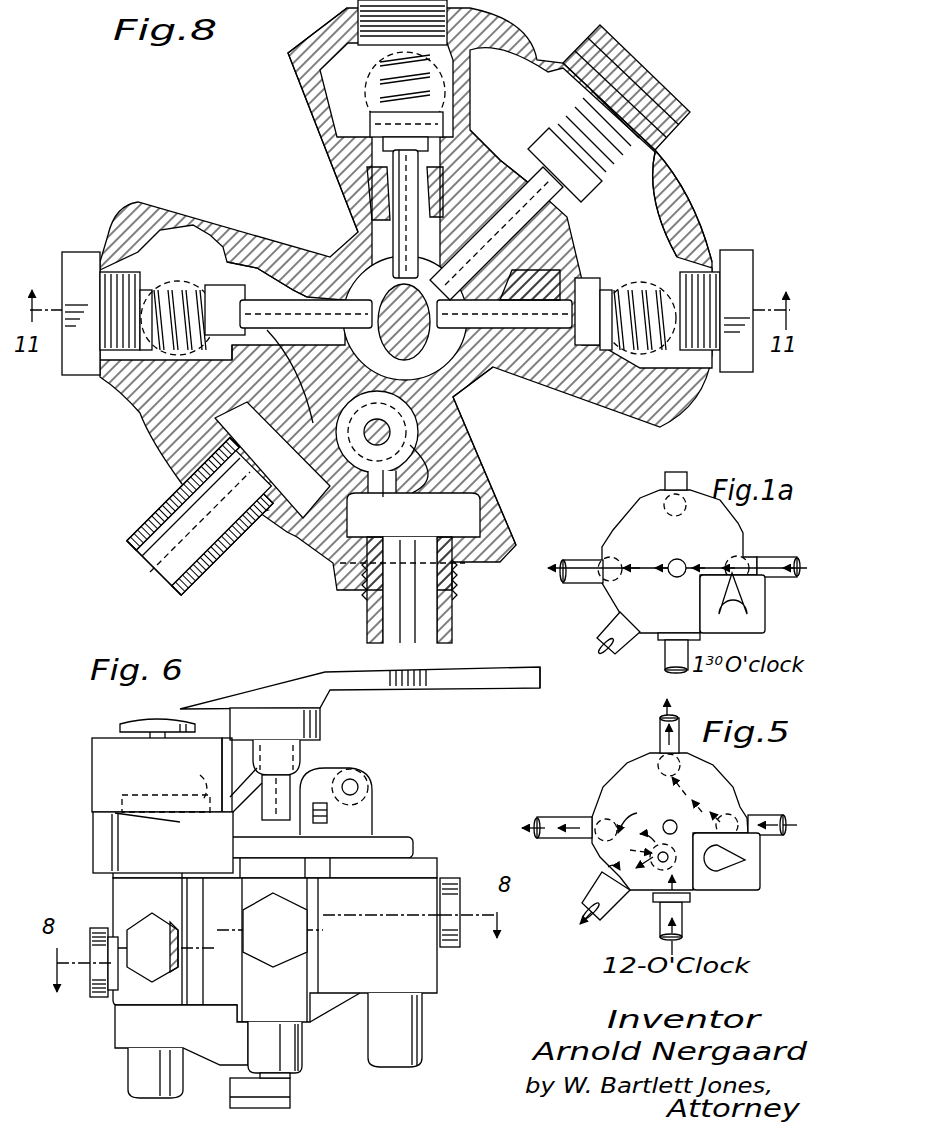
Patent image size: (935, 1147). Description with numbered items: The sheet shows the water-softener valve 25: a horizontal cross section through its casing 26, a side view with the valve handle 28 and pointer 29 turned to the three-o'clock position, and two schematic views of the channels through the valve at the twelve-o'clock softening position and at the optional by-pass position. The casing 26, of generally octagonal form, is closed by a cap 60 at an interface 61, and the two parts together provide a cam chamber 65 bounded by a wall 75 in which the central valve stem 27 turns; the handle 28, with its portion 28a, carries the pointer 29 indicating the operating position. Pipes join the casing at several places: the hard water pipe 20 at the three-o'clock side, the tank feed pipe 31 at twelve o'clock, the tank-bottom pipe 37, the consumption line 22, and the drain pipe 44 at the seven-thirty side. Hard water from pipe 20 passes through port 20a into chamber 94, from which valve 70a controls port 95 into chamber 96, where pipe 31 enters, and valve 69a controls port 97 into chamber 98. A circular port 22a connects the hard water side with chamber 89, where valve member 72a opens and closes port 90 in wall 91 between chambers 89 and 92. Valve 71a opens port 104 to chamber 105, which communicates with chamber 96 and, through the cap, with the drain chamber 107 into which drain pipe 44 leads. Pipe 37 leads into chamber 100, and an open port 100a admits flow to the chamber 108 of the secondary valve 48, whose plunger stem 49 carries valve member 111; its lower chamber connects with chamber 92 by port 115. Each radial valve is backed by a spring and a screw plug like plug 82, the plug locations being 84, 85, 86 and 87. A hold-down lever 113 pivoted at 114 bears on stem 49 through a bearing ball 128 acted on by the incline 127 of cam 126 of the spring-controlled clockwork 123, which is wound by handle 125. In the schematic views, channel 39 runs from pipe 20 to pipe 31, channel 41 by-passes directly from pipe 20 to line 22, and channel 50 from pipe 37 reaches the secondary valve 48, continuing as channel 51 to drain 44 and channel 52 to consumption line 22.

In FIG. 8, the hard water pipe 20 is at (614, 270).
In FIG. 1A, the hard water pipe 20 is at (770, 563).
In FIG. 5, the hard water pipe 20 is at (772, 818).
In FIG. 6, the hard water pipe 20 is at (135, 1080).
In FIG. 8, the port in wall 20a is at (640, 274).
In FIG. 8, the consumption pipe 22 is at (168, 276).
In FIG. 1A, the consumption pipe 22 is at (585, 582).
In FIG. 5, the consumption pipe 22 is at (560, 818).
In FIG. 6, the consumption pipe 22 is at (422, 1030).
In FIG. 8, the circular port 22a is at (180, 346).
In FIG. 8, the valve 25 is at (177, 194).
In FIG. 1A, the valve 25 is at (645, 497).
In FIG. 5, the valve 25 is at (608, 779).
In FIG. 6, the valve 25 is at (96, 870).
In FIG. 8, the casing 26 is at (300, 105).
In FIG. 6, the casing 26 is at (110, 1017).
In FIG. 8, the valve stem 27 is at (380, 306).
In FIG. 1A, the valve stem 27 is at (683, 562).
In FIG. 5, the valve stem 27 is at (682, 824).
In FIG. 6, the valve handle 28 is at (400, 688).
In FIG. 6, the handle hub 28a is at (300, 750).
In FIG. 6, the pointer 29 is at (195, 705).
In FIG. 8, the tank feed pipe 31 is at (372, 86).
In FIG. 1A, the tank feed pipe 31 is at (680, 474).
In FIG. 5, the tank feed pipe 31 is at (660, 733).
In FIG. 6, the tank feed pipe 31 is at (296, 1050).
In FIG. 8, the tank outlet pipe 37 is at (452, 621).
In FIG. 1A, the tank outlet pipe 37 is at (665, 660).
In FIG. 5, the tank outlet pipe 37 is at (660, 931).
In FIG. 5, the channel 39 is at (692, 800).
In FIG. 1A, the by-pass channel 41 is at (657, 565).
In FIG. 8, the drain pipe 44 is at (152, 520).
In FIG. 1A, the drain pipe 44 is at (604, 630).
In FIG. 5, the drain pipe 44 is at (600, 894).
In FIG. 5, the secondary valve 48 is at (641, 855).
In FIG. 8, the valve stem 49 is at (390, 433).
In FIG. 5, the valve stem 49 is at (658, 864).
In FIG. 5, the channel 50 is at (685, 895).
In FIG. 5, the channel 51 is at (608, 867).
In FIG. 5, the channel 52 is at (636, 821).
In FIG. 6, the casing cap 60 is at (403, 833).
In FIG. 6, the interface 61 is at (396, 870).
In FIG. 8, the cam chamber 65 is at (390, 287).
In FIG. 8, the valve 69a is at (527, 308).
In FIG. 8, the valve 70a is at (492, 236).
In FIG. 8, the valve 71a is at (395, 196).
In FIG. 8, the valve member 72a is at (293, 328).
In FIG. 8, the wall 75 is at (460, 395).
In FIG. 6, the screw plug 82 is at (284, 1108).
In FIG. 8, the closure plug 84 is at (80, 258).
In FIG. 6, the closure plug 84 is at (452, 948).
In FIG. 6, the closure plug 85 is at (275, 955).
In FIG. 8, the closure plug 86 is at (690, 112).
In FIG. 6, the closure plug 86 is at (150, 920).
In FIG. 8, the closure plug 87 is at (745, 270).
In FIG. 6, the closure plug 87 is at (97, 926).
In FIG. 8, the chamber 89 is at (198, 228).
In FIG. 8, the port 90 is at (247, 293).
In FIG. 8, the wall 91 is at (237, 362).
In FIG. 8, the chamber 92 is at (298, 290).
In FIG. 8, the hard water chamber 94 is at (645, 230).
In FIG. 8, the port 95 is at (495, 195).
In FIG. 8, the chamber 96 is at (499, 111).
In FIG. 8, the port 97 is at (562, 338).
In FIG. 8, the chamber 98 is at (522, 345).
In FIG. 8, the chamber 100 is at (465, 515).
In FIG. 8, the port 100a is at (386, 500).
In FIG. 8, the port 104 is at (383, 148).
In FIG. 8, the chamber 105 is at (380, 183).
In FIG. 8, the drain chamber 107 is at (280, 456).
In FIG. 8, the main valve chamber 108 is at (414, 486).
In FIG. 8, the valve member 111 is at (408, 447).
In FIG. 6, the hold-down lever 113 is at (320, 774).
In FIG. 6, the pivot 114 is at (359, 786).
In FIG. 8, the port 115 is at (338, 396).
In FIG. 1A, the clockwork 123 is at (762, 624).
In FIG. 5, the clockwork 123 is at (760, 875).
In FIG. 6, the clockwork 123 is at (92, 774).
In FIG. 1A, the winding handle 125 is at (742, 598).
In FIG. 5, the winding handle 125 is at (736, 872).
In FIG. 6, the winding handle 125 is at (135, 726).
In FIG. 6, the rotary cam 126 is at (122, 800).
In FIG. 6, the cam incline 127 is at (150, 822).
In FIG. 6, the bearing ball 128 is at (199, 786).